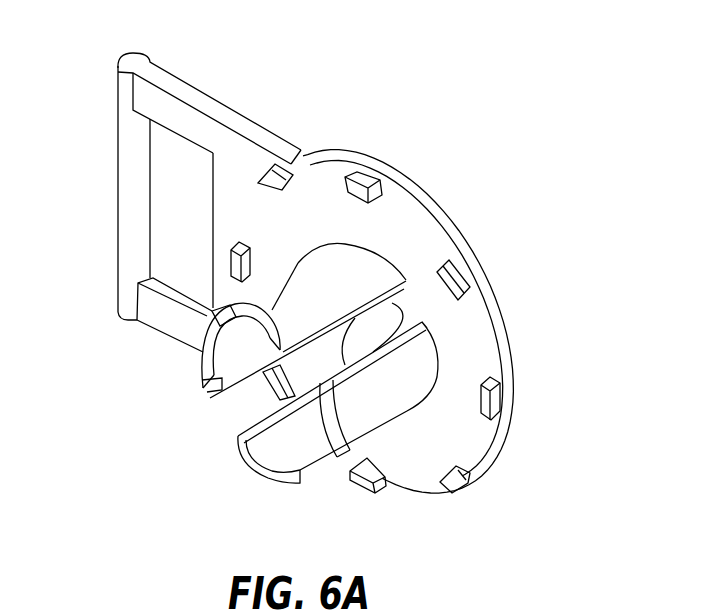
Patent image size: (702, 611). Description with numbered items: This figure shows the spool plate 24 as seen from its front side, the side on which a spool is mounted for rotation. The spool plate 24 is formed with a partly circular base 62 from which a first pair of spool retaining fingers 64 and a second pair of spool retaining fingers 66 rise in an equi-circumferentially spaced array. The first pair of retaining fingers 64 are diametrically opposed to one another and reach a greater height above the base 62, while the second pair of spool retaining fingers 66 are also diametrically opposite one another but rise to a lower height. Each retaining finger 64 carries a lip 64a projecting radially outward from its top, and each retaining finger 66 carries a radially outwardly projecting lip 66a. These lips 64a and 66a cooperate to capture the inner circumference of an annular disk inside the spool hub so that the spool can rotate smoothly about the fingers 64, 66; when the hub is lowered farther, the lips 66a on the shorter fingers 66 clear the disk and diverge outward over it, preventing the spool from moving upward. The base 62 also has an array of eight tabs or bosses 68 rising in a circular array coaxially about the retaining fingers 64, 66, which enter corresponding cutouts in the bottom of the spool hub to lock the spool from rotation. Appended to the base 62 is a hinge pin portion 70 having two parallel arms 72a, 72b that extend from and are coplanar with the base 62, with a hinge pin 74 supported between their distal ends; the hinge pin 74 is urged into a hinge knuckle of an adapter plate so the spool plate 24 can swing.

The spool plate 24 is at (512, 346).
The base 62 is at (295, 234).
The first pair of spool retaining fingers 64 is at (370, 270).
The lip 64a is at (240, 304).
The second pair of spool retaining fingers 66 is at (430, 353).
The lip 66a is at (203, 346).
The tabs or bosses 68 is at (293, 155).
The hinge pin portion 70 is at (229, 106).
The arm 72a is at (165, 80).
The arm 72b is at (145, 305).
The hinge pin 74 is at (118, 198).